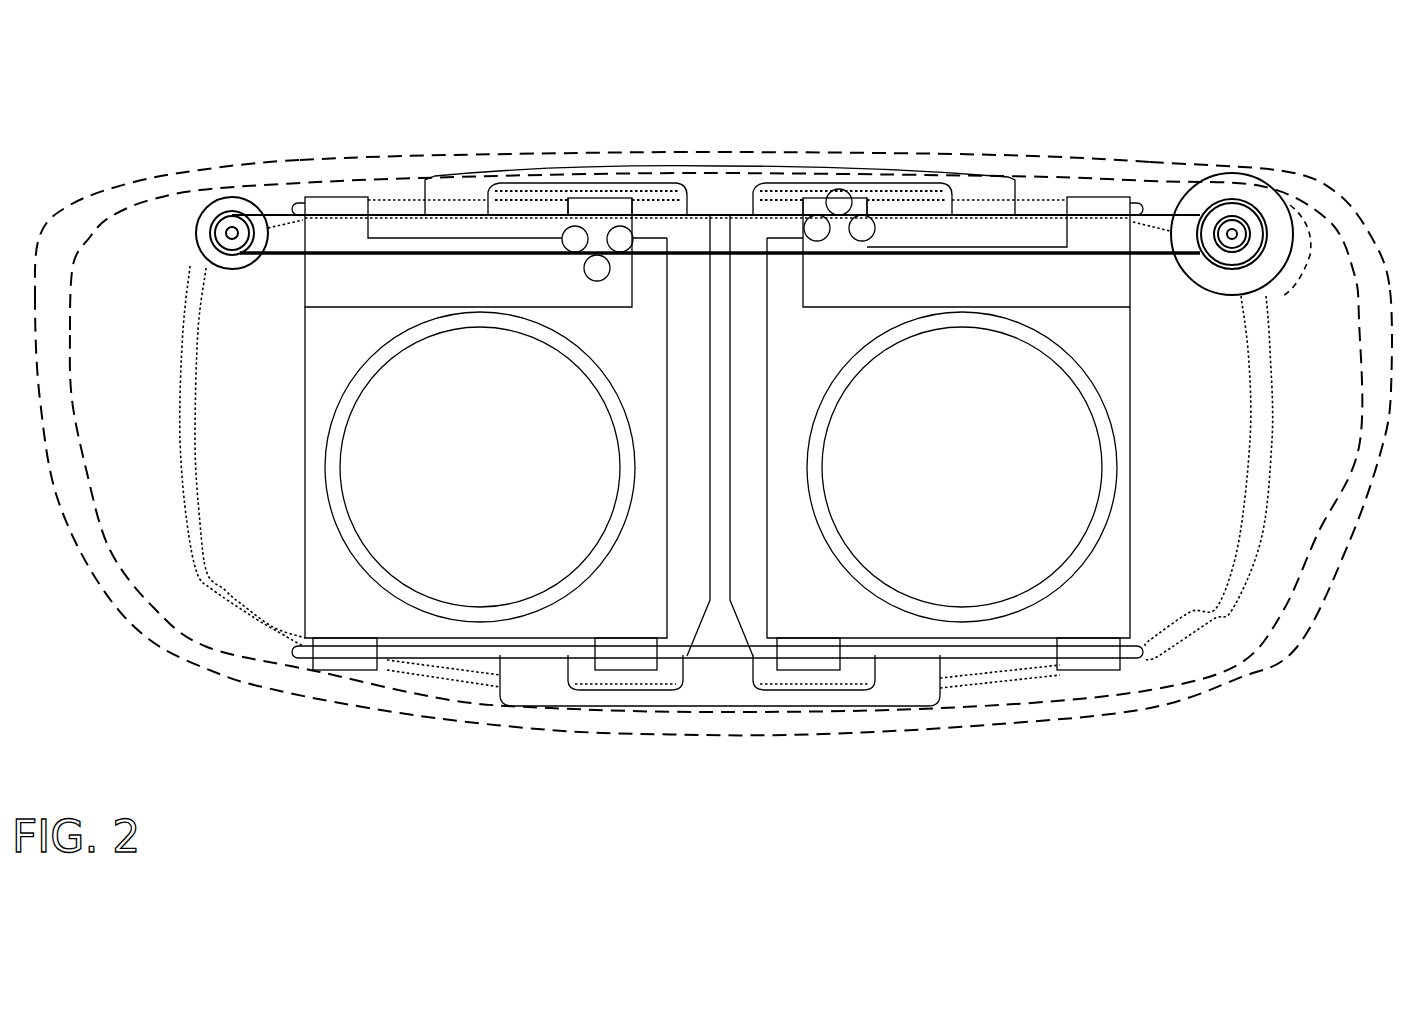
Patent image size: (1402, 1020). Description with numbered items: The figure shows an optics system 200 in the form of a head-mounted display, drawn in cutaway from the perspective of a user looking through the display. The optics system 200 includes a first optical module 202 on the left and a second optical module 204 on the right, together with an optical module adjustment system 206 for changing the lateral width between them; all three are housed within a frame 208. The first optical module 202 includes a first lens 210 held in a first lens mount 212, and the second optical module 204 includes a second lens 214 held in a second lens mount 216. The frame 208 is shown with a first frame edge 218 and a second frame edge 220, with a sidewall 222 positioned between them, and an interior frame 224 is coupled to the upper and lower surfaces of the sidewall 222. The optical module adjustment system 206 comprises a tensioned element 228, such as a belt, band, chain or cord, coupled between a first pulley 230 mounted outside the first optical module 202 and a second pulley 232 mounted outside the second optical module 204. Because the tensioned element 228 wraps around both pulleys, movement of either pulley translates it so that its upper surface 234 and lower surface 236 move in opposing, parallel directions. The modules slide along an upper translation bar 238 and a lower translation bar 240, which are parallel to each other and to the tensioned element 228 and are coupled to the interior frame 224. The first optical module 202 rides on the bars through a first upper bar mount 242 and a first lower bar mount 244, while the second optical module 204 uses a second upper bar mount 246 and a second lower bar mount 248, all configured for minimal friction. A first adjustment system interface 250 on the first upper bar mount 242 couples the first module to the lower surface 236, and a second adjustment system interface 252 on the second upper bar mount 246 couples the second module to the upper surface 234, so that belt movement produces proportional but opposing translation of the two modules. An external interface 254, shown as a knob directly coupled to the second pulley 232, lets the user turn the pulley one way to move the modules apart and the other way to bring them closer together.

The optics system 200 is at (1000, 62).
The first optical module 202 is at (454, 418).
The second optical module 204 is at (984, 413).
The optical module adjustment system 206 is at (1218, 143).
The frame 208 is at (128, 145).
The first lens 210 is at (496, 483).
The first lens mount 212 is at (646, 612).
The second lens 214 is at (978, 483).
The second lens mount 216 is at (1110, 612).
The first frame edge 218 is at (92, 518).
The second frame edge 220 is at (187, 437).
The sidewall 222 is at (143, 377).
The interior frame 224 is at (738, 197).
The tensioned element 228 is at (287, 268).
The first pulley 230 is at (195, 228).
The second pulley 232 is at (1201, 291).
The upper surface 234 is at (448, 213).
The lower surface 236 is at (548, 262).
The upper translation bar 238 is at (1035, 205).
The lower translation bar 240 is at (452, 656).
The first upper bar mount 242 is at (358, 292).
The first lower bar mount 244 is at (338, 636).
The second upper bar mount 246 is at (1118, 292).
The second lower bar mount 248 is at (790, 636).
The first adjustment system interface 250 is at (576, 257).
The second adjustment system interface 252 is at (835, 232).
The external interface 254 is at (1283, 295).